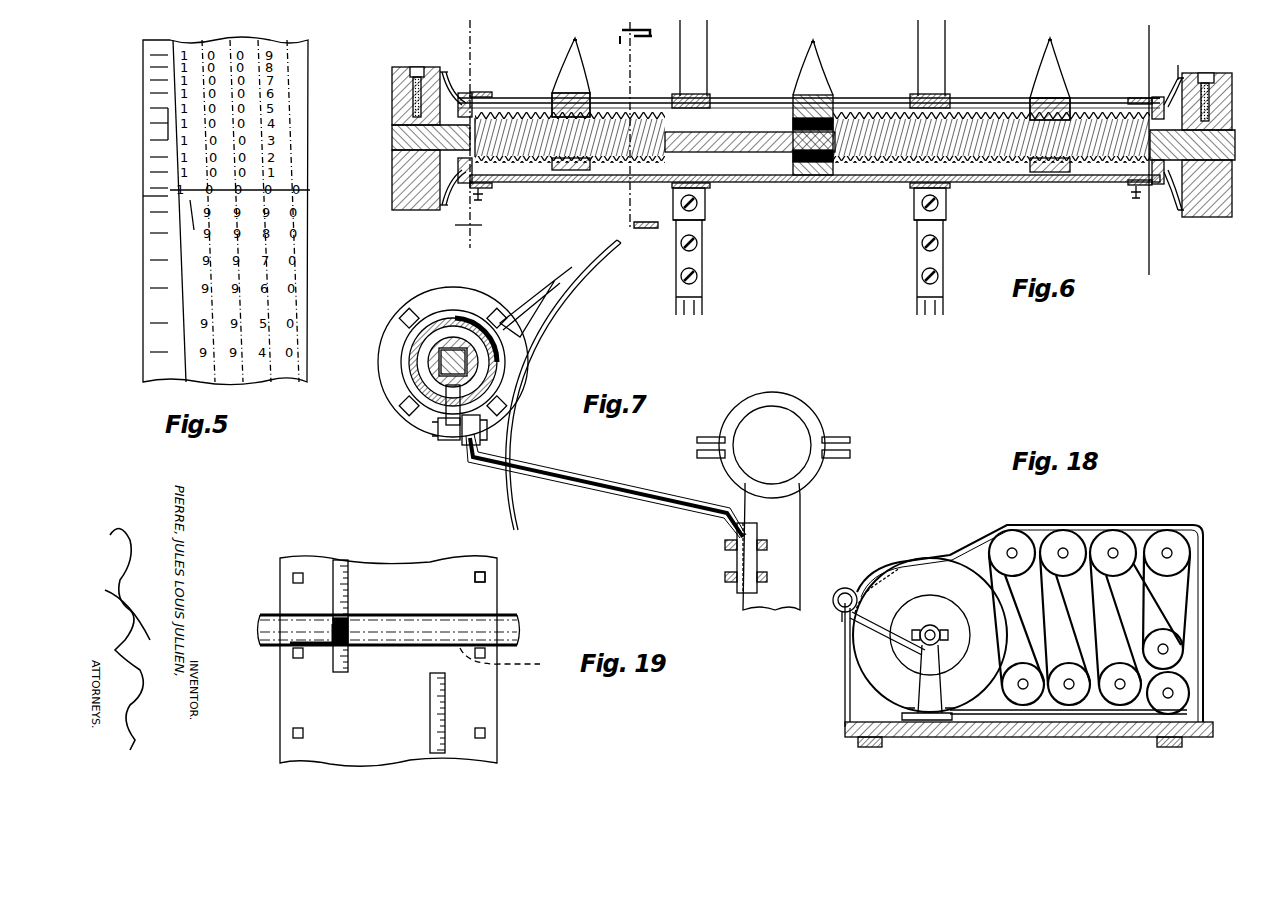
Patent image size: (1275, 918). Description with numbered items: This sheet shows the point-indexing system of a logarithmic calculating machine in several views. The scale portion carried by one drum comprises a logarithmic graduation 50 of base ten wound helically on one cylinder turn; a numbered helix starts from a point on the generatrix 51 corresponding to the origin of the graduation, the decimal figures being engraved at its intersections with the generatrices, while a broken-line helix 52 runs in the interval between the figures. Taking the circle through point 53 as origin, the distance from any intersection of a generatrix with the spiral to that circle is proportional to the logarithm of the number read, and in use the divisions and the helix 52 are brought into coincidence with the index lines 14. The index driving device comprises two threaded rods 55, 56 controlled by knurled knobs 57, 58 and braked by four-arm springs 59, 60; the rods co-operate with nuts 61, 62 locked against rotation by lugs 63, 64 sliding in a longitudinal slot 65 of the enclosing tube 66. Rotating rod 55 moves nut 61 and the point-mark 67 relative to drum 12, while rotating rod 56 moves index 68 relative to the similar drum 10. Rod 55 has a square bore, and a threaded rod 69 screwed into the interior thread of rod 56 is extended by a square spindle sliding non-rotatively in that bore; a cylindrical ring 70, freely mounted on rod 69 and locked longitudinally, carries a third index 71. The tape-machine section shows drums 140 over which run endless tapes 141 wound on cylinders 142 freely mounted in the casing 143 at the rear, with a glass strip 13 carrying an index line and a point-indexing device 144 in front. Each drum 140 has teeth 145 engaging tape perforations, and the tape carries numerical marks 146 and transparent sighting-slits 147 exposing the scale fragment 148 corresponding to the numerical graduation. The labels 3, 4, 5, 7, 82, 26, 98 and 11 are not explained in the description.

In FIG. 5, the logarithmic graduation 50 is at (150, 112).
In FIG. 5, the generatrix 51 is at (310, 190).
In FIG. 5, the helix 52 is at (193, 212).
In FIG. 5, the origin point 53 is at (168, 190).
In FIG. 6, the threaded rod 55 is at (500, 123).
In FIG. 7, the threaded rod 55 is at (432, 405).
In FIG. 6, the threaded rod 56 is at (1100, 165).
In FIG. 6, the knurled knob 57 is at (392, 182).
In FIG. 7, the knurled knob 57 is at (382, 378).
In FIG. 6, the knurled knob 58 is at (1230, 188).
In FIG. 6, the four-arm spring 59 is at (445, 78).
In FIG. 7, the four-arm spring 59 is at (402, 327).
In FIG. 6, the four-arm spring 60 is at (1172, 78).
In FIG. 6, the nut 61 is at (590, 93).
In FIG. 6, the nut 62 is at (1040, 98).
In FIG. 6, the lug 63 is at (560, 93).
In FIG. 6, the lug 64 is at (1070, 98).
In FIG. 6, the longitudinal slot 65 is at (640, 98).
In FIG. 7, the longitudinal slot 65 is at (484, 330).
In FIG. 6, the tube 66 is at (625, 182).
In FIG. 7, the tube 66 is at (433, 320).
In FIG. 6, the point-mark 67 is at (578, 55).
In FIG. 7, the point-mark 67 is at (558, 296).
In FIG. 6, the index 68 is at (1053, 62).
In FIG. 6, the threaded rod 69 is at (770, 152).
In FIG. 7, the threaded rod 69 is at (445, 420).
In FIG. 6, the cylindrical ring 70 is at (835, 85).
In FIG. 6, the index 71 is at (820, 60).
In FIG. 6, the position mark 3 is at (569, 30).
In FIG. 6, the position mark 4 is at (576, 30).
In FIG. 6, the position mark 5 is at (581, 30).
In FIG. 6, the position mark 7 is at (1042, 38).
In FIG. 6, the position mark 82 is at (1058, 38).
In FIG. 6, the position mark 26 is at (802, 33).
In FIG. 6, the position mark 98 is at (821, 33).
In FIG. 6, the drum 10 is at (955, 50).
In FIG. 7, the drum 10 is at (598, 266).
In FIG. 6, the support post 11 is at (715, 57).
In FIG. 6, the drum 12 is at (457, 226).
In FIG. 19, the glass strip 13 is at (262, 623).
In FIG. 18, the glass strip 13 is at (878, 565).
In FIG. 19, the index line 14 is at (574, 658).
In FIG. 19, the teeth 145 is at (487, 577).
In FIG. 19, the numerical marks 146 is at (398, 578).
In FIG. 19, the sighting-slit 147 is at (342, 562).
In FIG. 19, the logarithmic scale fragment 148 is at (332, 623).
In FIG. 18, the drum 140 is at (900, 655).
In FIG. 18, the endless tape 141 is at (960, 737).
In FIG. 18, the cylinder 142 is at (1155, 538).
In FIG. 18, the casing 143 is at (1160, 525).
In FIG. 18, the point-indexing device 144 is at (836, 615).